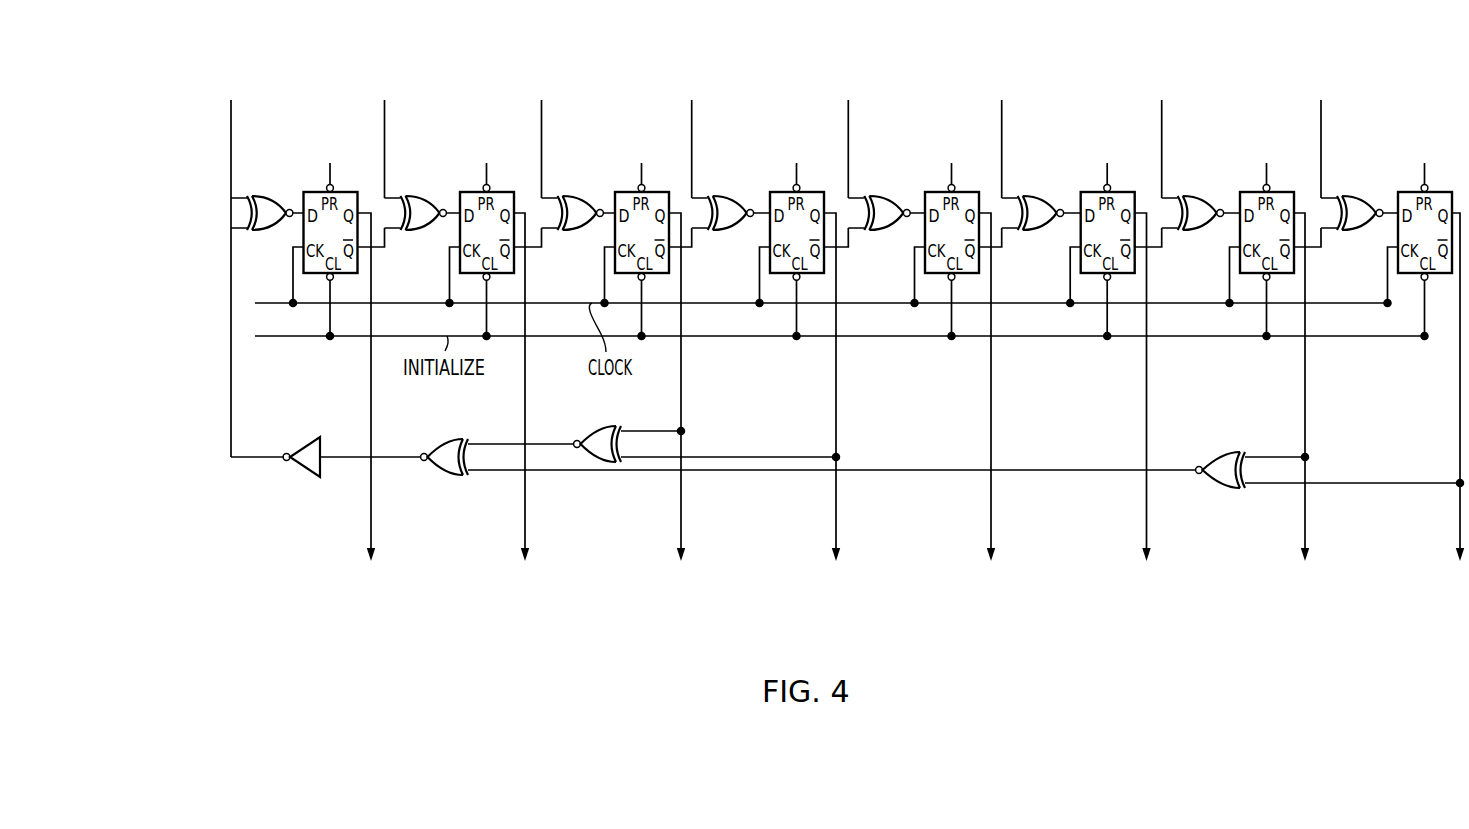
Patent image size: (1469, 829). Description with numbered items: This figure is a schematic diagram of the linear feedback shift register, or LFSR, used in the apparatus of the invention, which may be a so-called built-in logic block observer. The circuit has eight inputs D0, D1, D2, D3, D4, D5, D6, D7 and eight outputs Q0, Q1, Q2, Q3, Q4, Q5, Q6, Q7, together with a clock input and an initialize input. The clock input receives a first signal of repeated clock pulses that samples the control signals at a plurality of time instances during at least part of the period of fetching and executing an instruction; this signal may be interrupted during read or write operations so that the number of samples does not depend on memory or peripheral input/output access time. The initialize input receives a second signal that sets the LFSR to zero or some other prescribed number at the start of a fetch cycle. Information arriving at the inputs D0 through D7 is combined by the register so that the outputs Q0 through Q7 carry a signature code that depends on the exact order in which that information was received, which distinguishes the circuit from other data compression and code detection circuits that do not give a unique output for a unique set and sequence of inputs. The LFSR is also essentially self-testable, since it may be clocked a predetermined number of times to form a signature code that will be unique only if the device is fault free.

The input D0 is at (245, 278).
The input D1 is at (399, 149).
The input D2 is at (556, 149).
The input D3 is at (706, 149).
The input D4 is at (862, 149).
The input D5 is at (1016, 149).
The input D6 is at (1176, 149).
The input D7 is at (1335, 149).
The output Q0 is at (361, 387).
The output Q1 is at (515, 387).
The output Q2 is at (671, 387).
The output Q3 is at (826, 387).
The output Q4 is at (981, 387).
The output Q5 is at (1137, 387).
The output Q6 is at (1295, 387).
The output Q7 is at (1450, 387).